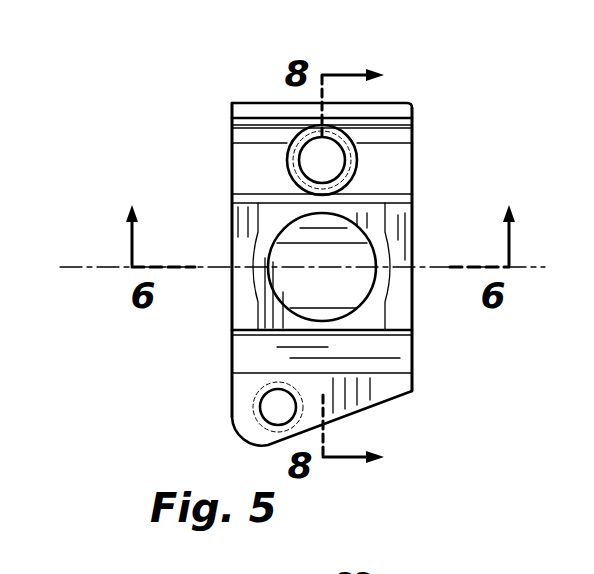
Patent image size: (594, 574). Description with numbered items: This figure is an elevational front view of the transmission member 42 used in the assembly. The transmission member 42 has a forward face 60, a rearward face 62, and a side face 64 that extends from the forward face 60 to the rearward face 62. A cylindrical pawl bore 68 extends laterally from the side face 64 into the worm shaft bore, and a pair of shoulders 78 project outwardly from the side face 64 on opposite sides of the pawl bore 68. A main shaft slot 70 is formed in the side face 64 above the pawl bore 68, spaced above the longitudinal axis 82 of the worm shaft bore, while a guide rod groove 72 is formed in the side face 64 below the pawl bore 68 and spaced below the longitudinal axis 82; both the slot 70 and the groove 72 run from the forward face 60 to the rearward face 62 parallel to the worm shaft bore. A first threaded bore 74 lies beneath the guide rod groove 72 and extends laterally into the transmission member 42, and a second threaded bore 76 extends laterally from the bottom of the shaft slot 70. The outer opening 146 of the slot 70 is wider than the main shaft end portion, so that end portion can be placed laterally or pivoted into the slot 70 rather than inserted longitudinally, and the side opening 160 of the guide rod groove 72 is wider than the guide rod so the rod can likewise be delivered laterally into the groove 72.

The transmission member 42 is at (438, 120).
The forward face 60 is at (232, 312).
The rearward face 62 is at (412, 303).
The side face 64 is at (270, 216).
The pawl bore 68 is at (340, 255).
The main shaft slot 70 is at (270, 137).
The guide rod groove 72 is at (397, 355).
The first threaded bore 74 is at (275, 405).
The second threaded bore 76 is at (325, 155).
The shoulders 78 is at (242, 237).
The longitudinal axis 82 is at (92, 265).
The outer opening 146 is at (255, 158).
The side opening 160 is at (250, 355).